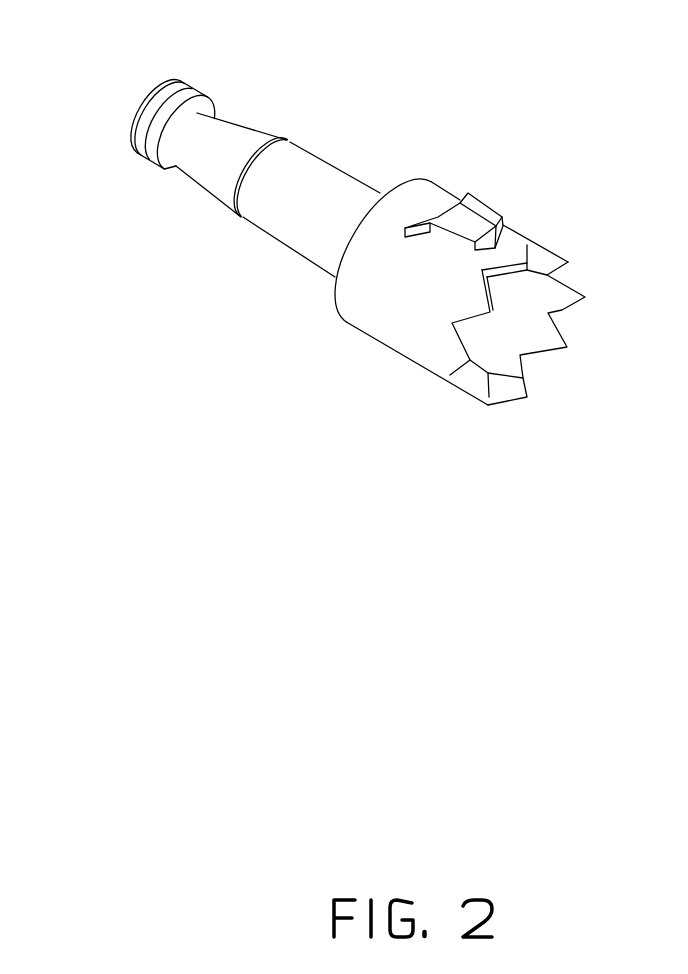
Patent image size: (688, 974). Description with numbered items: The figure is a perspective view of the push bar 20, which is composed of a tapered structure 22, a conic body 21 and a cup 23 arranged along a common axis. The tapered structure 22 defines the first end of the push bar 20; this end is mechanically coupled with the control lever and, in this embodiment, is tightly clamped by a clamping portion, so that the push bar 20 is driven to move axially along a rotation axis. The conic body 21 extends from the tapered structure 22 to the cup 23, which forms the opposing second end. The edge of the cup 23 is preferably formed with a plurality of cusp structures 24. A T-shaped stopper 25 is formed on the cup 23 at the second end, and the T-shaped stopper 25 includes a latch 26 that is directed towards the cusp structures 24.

The push bar 20 is at (421, 112).
The conic body 21 is at (287, 175).
The tapered structure 22 is at (201, 137).
The cup 23 is at (398, 320).
The cusp structures 24 is at (475, 381).
The T-shaped stopper 25 is at (452, 212).
The latch 26 is at (503, 229).